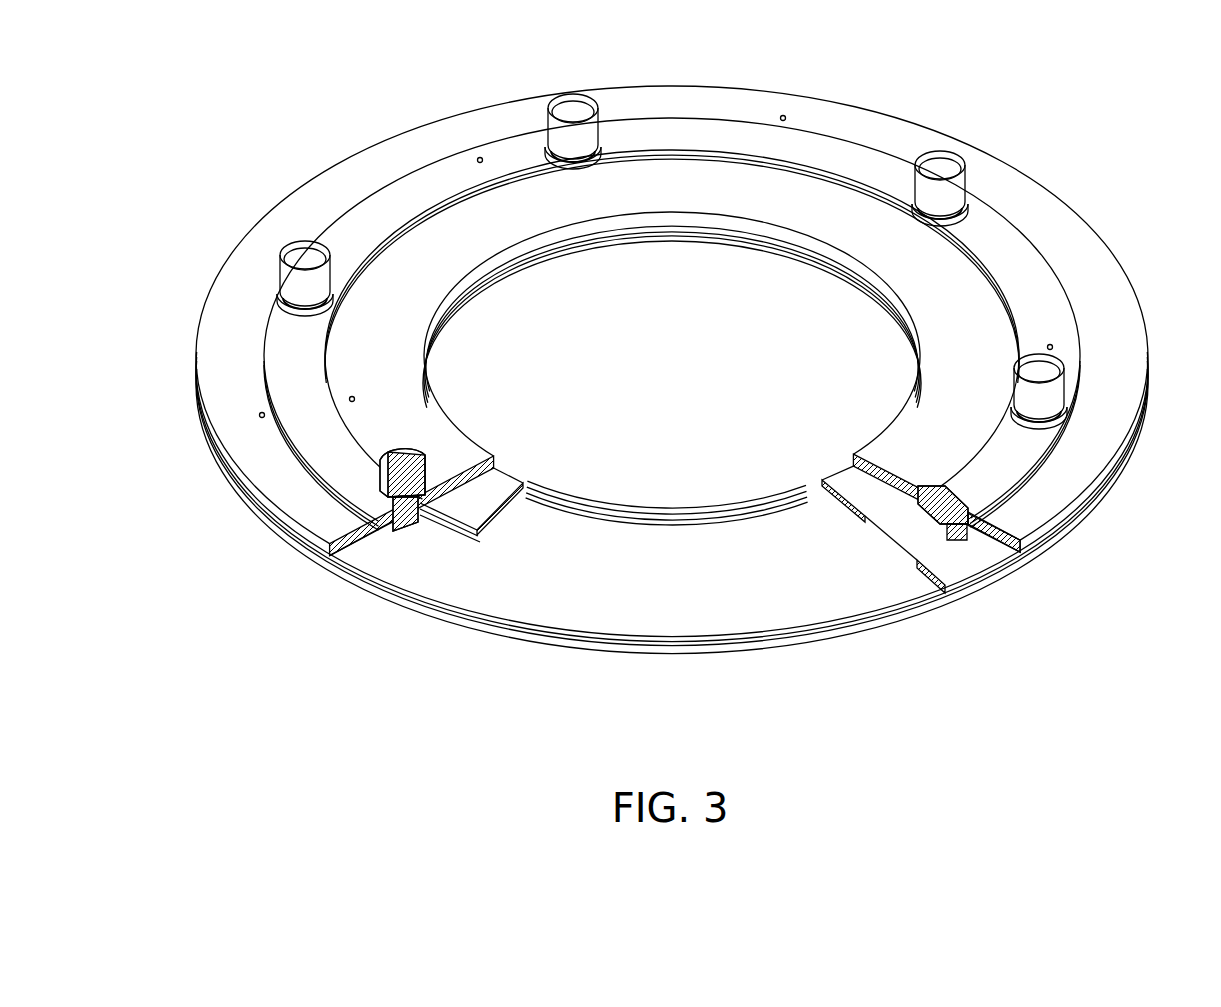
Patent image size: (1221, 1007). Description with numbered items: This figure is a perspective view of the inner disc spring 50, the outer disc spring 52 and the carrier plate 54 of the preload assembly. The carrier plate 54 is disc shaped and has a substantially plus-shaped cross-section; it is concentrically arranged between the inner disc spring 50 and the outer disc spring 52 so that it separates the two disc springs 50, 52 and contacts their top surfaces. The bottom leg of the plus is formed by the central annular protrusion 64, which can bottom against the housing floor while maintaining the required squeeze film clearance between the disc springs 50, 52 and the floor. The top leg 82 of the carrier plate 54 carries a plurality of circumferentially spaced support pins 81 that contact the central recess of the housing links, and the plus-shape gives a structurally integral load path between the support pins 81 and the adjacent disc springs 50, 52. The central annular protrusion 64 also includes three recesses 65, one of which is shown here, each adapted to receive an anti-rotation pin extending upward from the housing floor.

The inner disc spring 50 is at (857, 500).
The outer disc spring 52 is at (378, 568).
The carrier plate 54 is at (300, 493).
The central annular protrusion 64 is at (455, 525).
The recess 65 is at (920, 567).
The support pin 81 is at (1053, 393).
The top leg 82 is at (970, 495).